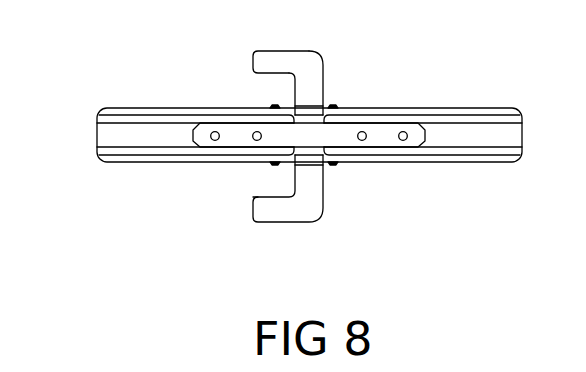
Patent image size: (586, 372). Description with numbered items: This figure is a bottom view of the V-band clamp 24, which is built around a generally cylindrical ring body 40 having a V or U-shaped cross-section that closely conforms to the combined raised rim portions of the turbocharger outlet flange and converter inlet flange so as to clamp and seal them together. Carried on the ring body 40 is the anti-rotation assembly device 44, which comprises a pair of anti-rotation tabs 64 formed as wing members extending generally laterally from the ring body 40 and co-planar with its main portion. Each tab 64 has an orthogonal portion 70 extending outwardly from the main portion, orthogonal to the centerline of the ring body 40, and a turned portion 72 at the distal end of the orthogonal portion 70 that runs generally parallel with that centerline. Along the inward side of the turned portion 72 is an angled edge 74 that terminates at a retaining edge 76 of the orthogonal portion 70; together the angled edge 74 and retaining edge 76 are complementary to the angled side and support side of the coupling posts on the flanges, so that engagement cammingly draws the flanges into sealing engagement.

The V-band clamp 24 is at (490, 56).
The ring body 40 is at (97, 137).
The anti-rotation assembly device 44 is at (347, 255).
The anti-rotation tabs 64 is at (315, 52).
The orthogonal portion 70 is at (324, 83).
The turned portion 72 is at (282, 51).
The angled edge 74 is at (287, 76).
The retaining edge 76 is at (291, 105).